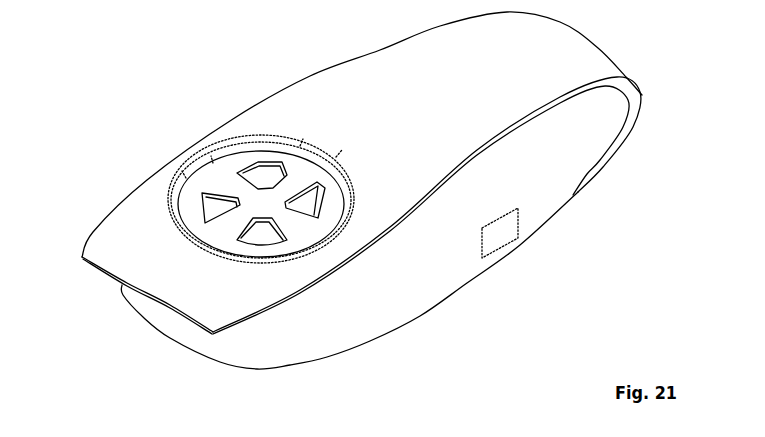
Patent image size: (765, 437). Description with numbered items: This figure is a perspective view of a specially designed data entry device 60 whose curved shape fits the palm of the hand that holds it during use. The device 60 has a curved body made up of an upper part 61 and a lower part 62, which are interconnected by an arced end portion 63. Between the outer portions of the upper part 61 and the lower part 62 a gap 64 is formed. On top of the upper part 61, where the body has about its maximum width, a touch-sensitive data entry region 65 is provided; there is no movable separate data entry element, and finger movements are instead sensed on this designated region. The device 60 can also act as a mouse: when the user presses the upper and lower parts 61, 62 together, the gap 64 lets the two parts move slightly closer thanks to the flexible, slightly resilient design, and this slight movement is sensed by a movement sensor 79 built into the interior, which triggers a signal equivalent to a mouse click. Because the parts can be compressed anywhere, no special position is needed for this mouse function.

The data entry device 60 is at (366, 189).
The upper part 61 is at (233, 119).
The lower part 62 is at (467, 283).
The arced end portion 63 is at (642, 118).
The gap 64 is at (309, 327).
The data entry region 65 is at (299, 163).
The movement sensor 79 is at (518, 218).